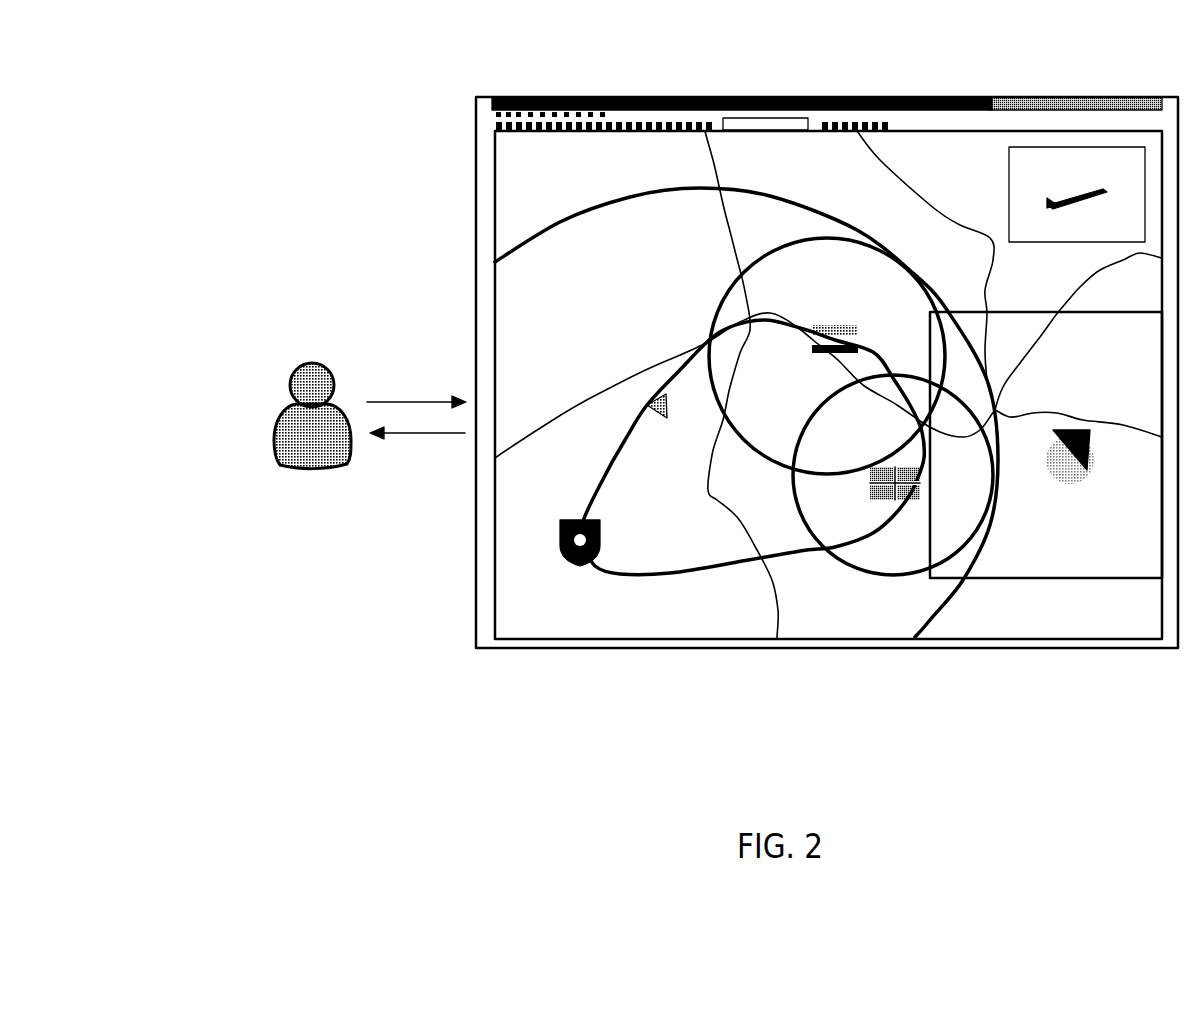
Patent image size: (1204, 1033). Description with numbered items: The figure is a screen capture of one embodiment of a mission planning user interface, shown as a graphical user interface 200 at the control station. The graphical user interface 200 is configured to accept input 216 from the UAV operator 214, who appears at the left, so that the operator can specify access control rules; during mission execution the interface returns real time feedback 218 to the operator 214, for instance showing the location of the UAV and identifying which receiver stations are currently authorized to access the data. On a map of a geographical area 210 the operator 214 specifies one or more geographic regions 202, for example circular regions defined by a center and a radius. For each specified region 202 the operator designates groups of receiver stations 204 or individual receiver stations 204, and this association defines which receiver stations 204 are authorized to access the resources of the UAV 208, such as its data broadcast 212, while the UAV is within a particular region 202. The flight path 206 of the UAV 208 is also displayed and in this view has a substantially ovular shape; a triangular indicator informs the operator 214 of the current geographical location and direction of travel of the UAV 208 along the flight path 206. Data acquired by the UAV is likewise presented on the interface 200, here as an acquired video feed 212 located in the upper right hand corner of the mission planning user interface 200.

The graphical user interface 200 is at (903, 657).
The geographic regions 202 is at (1082, 582).
The receiver stations 204 is at (576, 565).
The flight path 206 is at (697, 567).
The UAV 208 is at (645, 403).
The map of a geographical area 210 is at (846, 135).
The data broadcast / acquired video feed 212 is at (1097, 165).
The UAV operator 214 is at (315, 364).
The input 216 is at (417, 398).
The real time feedback 218 is at (418, 435).